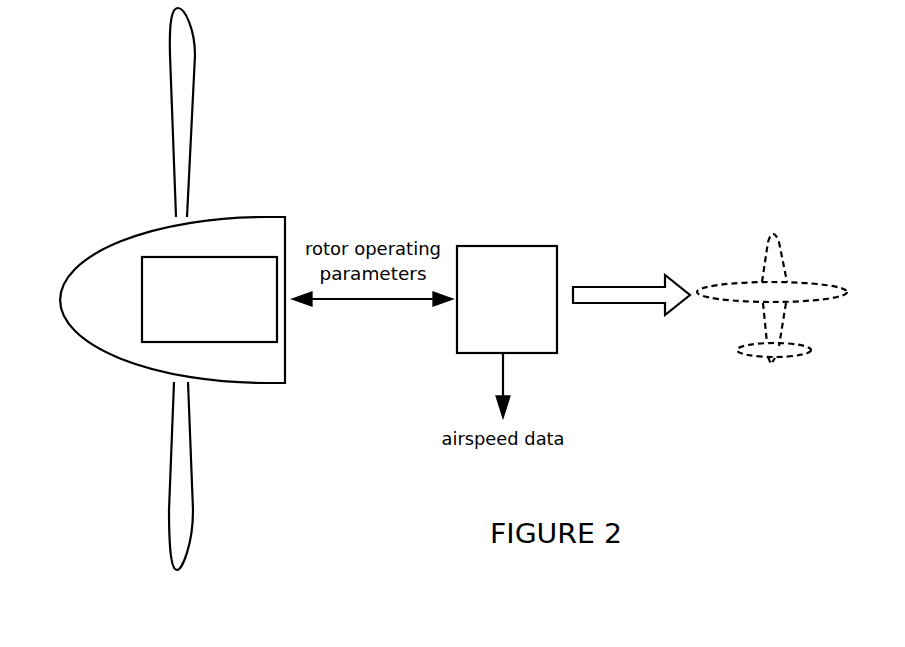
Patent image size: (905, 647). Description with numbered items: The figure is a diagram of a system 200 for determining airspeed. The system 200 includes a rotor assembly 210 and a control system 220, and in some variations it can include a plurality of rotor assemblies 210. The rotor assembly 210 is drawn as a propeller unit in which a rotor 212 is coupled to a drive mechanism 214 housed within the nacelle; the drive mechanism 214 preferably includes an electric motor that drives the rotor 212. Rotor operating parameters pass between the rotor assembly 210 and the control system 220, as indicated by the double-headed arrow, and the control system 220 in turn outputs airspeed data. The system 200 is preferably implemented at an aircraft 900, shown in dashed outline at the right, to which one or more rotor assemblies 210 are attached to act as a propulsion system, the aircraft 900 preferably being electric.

The system for determining airspeed 200 is at (344, 180).
The rotor assembly 210 is at (28, 573).
The rotor 212 is at (90, 240).
The drive mechanism 214 is at (209, 299).
The control system 220 is at (507, 332).
The aircraft 900 is at (773, 262).